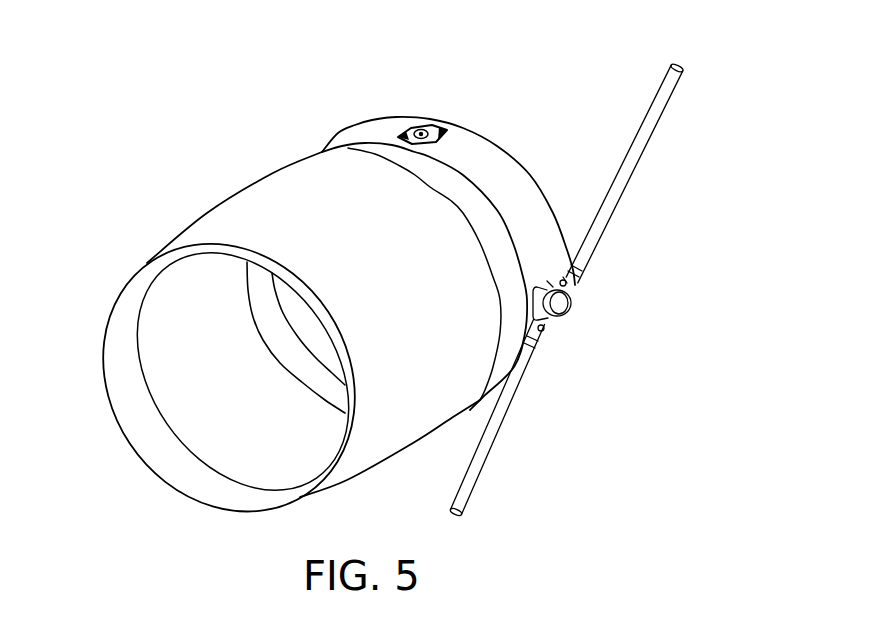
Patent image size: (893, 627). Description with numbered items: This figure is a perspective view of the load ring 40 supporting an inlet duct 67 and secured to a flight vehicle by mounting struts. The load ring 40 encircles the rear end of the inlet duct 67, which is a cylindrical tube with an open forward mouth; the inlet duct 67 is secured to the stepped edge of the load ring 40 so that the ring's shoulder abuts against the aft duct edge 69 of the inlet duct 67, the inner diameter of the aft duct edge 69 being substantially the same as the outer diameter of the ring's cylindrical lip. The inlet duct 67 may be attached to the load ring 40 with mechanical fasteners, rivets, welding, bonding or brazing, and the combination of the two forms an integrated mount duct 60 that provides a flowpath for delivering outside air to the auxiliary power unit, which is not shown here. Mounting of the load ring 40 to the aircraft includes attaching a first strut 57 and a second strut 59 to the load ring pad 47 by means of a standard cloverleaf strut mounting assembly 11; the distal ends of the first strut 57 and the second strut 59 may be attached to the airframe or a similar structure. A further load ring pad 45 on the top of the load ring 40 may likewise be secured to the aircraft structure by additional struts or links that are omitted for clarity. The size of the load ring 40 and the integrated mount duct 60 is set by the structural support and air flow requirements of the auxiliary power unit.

The cloverleaf strut mounting assembly 11 is at (576, 290).
The load ring 40 is at (388, 116).
The load ring pad 45 is at (436, 123).
The load ring pad 47 is at (572, 307).
The first strut 57 is at (640, 158).
The second strut 59 is at (490, 466).
The integrated mount duct 60 is at (311, 290).
The inlet duct 67 is at (163, 258).
The aft duct edge 69 is at (456, 204).